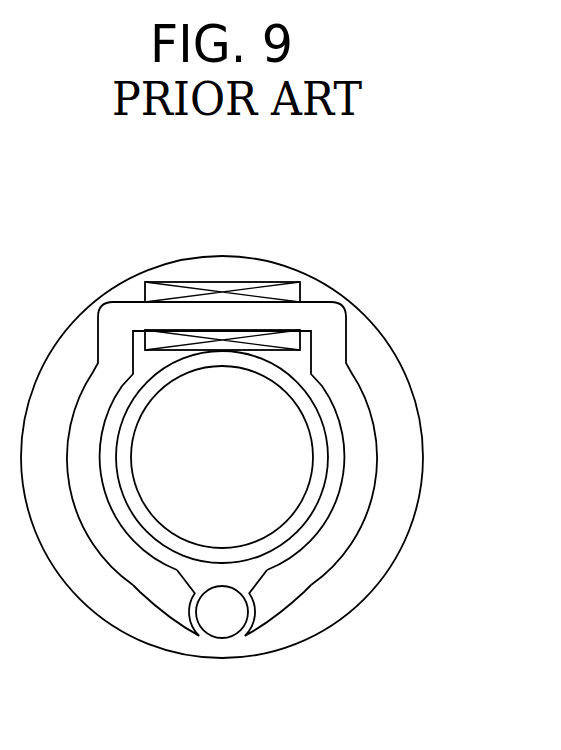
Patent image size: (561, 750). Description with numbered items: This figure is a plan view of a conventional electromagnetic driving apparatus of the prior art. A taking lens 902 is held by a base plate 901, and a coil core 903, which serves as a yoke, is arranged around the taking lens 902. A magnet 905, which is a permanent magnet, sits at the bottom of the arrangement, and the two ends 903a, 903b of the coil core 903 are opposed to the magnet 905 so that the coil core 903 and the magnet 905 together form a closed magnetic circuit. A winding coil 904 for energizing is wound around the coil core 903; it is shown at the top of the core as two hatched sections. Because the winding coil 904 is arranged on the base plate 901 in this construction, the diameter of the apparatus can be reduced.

The base plate 901 is at (393, 377).
The taking lens 902 is at (300, 473).
The coil core 903 is at (323, 317).
The end of coil core 903a is at (257, 613).
The end of coil core 903b is at (185, 613).
The winding coil 904 is at (247, 282).
The magnet 905 is at (223, 622).